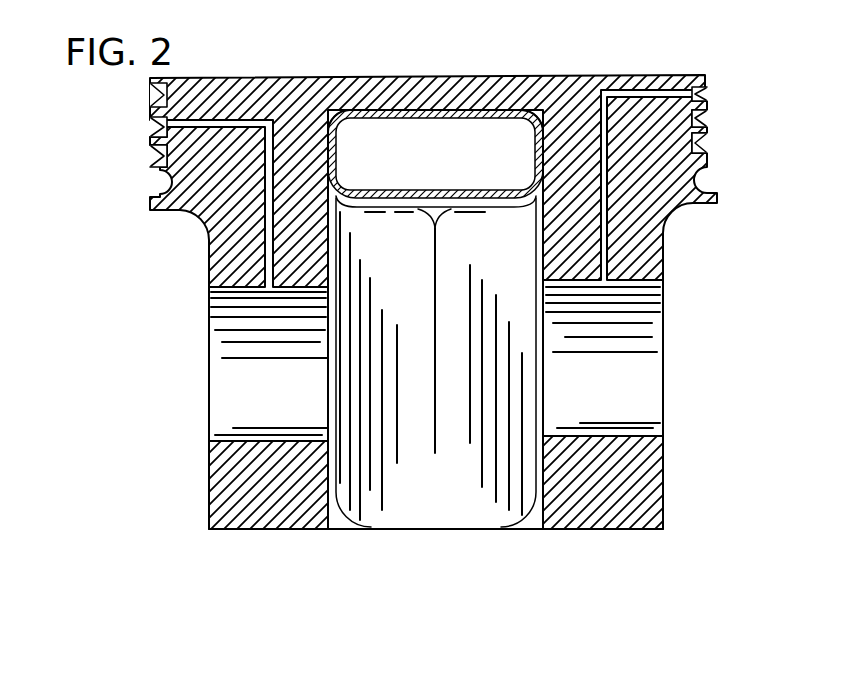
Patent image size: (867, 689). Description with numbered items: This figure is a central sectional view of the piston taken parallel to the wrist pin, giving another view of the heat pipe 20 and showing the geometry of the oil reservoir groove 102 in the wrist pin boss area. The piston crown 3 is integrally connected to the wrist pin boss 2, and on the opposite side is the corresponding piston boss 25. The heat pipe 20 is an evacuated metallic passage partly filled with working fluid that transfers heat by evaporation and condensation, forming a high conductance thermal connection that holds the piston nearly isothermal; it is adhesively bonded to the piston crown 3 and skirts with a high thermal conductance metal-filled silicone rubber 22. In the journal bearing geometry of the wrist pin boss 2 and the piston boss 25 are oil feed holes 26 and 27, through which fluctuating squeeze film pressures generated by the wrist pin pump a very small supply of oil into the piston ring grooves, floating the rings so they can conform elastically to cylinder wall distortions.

The wrist pin boss 2 is at (233, 493).
The piston crown 3 is at (316, 78).
The heat pipe 20 is at (452, 498).
The high thermal conductance silicone rubber 22 is at (418, 110).
The piston boss 25 is at (610, 473).
The oil feed hole 26 is at (258, 251).
The oil feed hole 27 is at (610, 210).
The oil reservoir groove 102 is at (157, 182).